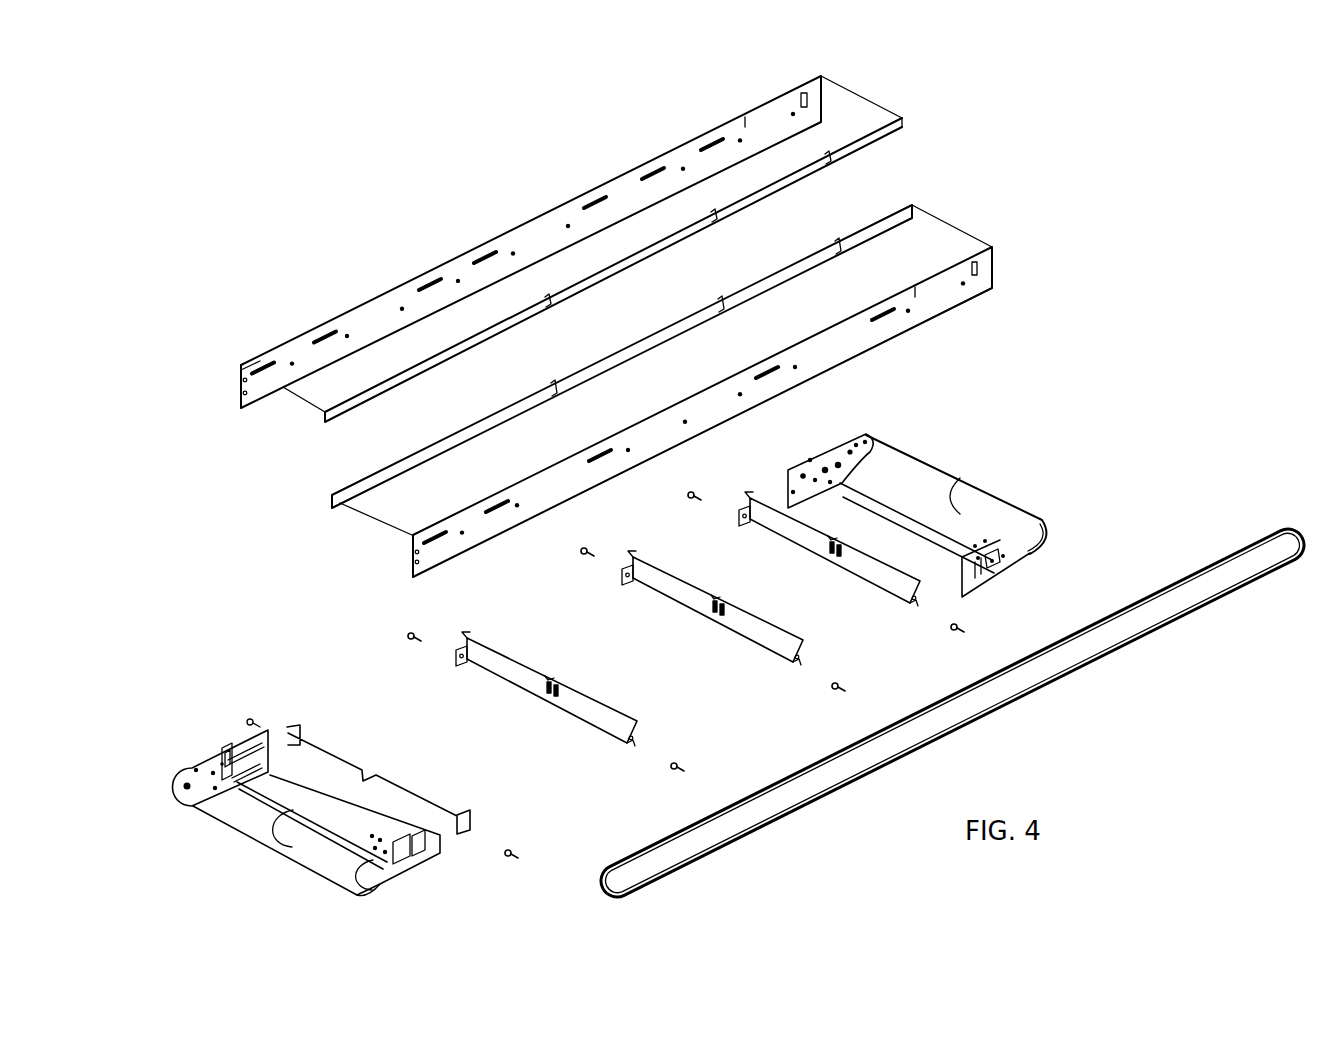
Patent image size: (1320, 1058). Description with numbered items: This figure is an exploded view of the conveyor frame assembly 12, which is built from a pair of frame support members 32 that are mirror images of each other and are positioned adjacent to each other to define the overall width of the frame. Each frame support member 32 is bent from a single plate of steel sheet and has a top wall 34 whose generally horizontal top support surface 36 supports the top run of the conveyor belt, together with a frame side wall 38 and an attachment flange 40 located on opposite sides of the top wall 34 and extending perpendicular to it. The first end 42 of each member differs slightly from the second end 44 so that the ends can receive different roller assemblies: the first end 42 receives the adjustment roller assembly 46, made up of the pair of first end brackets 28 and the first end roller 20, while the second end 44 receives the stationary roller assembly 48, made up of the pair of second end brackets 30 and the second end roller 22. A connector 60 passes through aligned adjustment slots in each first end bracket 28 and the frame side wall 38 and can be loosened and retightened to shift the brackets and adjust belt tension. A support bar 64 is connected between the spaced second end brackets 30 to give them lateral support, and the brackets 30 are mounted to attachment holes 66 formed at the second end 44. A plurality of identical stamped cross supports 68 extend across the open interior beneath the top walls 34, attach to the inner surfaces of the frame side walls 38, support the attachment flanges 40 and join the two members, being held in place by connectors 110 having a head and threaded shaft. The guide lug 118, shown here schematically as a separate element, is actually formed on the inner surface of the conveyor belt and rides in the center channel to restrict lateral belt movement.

The frame assembly 12 is at (1068, 190).
The first end roller 20 is at (238, 822).
The second end roller 22 is at (996, 510).
The first end bracket 28 is at (180, 770).
The second end bracket 30 is at (838, 445).
The frame support member 32 is at (850, 88).
The top wall 34 is at (880, 118).
The top support surface 36 is at (880, 115).
The frame side wall 38 is at (535, 225).
The attachment flange 40 is at (626, 268).
The first end 42 is at (275, 355).
The second end 44 is at (770, 110).
The adjustment roller assembly 46 is at (201, 720).
The stationary roller assembly 48 is at (947, 438).
The connector 60 is at (238, 745).
The support bar 64 is at (948, 545).
The attachment hole 66 is at (800, 92).
The cross support 68 is at (758, 612).
The connector 110 is at (405, 634).
The guide lug 118 is at (1175, 630).